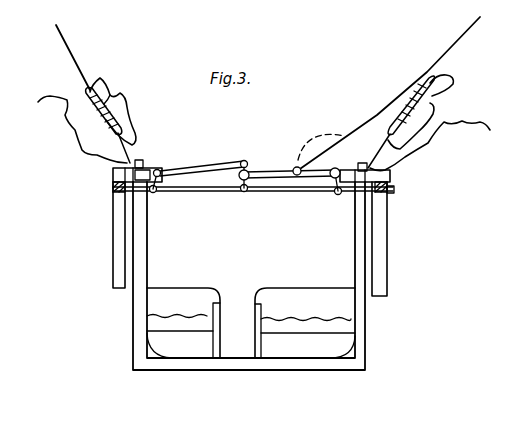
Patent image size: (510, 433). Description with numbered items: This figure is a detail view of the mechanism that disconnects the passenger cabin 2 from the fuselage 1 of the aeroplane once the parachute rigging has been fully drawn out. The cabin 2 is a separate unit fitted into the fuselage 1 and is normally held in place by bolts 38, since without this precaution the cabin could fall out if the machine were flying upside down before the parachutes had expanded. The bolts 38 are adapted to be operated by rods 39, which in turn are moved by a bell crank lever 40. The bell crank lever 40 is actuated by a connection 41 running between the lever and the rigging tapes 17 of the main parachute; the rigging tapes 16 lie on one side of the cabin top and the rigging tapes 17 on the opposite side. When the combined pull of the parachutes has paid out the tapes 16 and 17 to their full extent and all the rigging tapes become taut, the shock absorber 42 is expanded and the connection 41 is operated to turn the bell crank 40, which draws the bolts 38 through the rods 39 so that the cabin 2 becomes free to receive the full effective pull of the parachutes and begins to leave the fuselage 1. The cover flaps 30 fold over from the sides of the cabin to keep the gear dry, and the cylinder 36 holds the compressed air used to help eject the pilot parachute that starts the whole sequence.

The fuselage 1 is at (118, 236).
The passenger cabin 2 is at (138, 326).
The rigging tapes 16 is at (68, 53).
The rigging tapes 17 is at (462, 45).
The flaps 30 is at (97, 160).
The cylinder 36 is at (395, 192).
The bolts 38 is at (117, 187).
The rods 39 is at (203, 173).
The bell crank lever 40 is at (312, 181).
The connection 41 is at (378, 116).
The shock absorber 42 is at (430, 104).